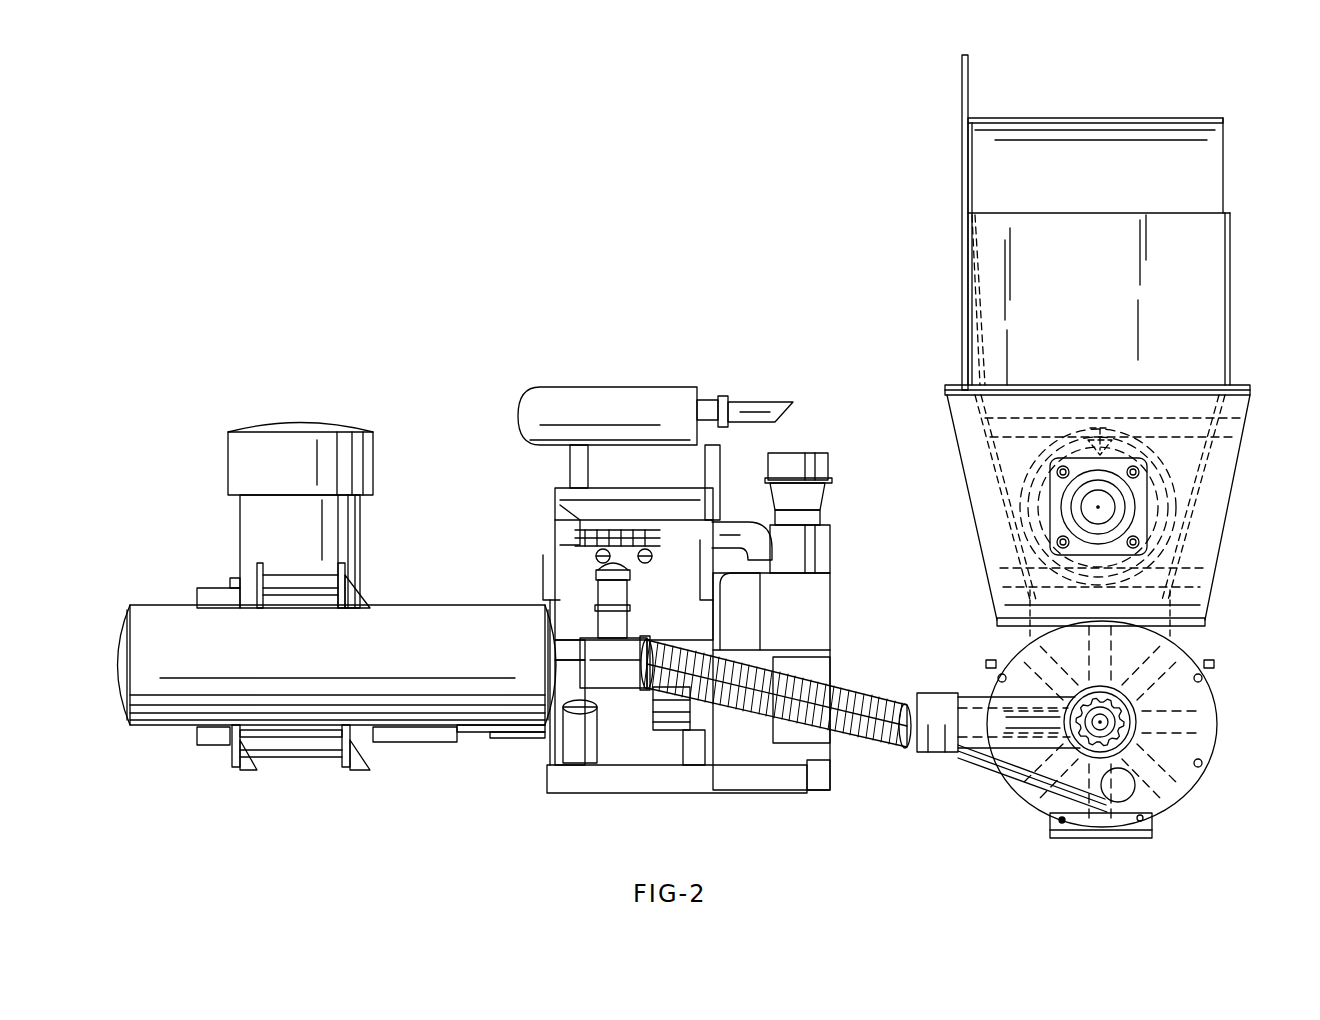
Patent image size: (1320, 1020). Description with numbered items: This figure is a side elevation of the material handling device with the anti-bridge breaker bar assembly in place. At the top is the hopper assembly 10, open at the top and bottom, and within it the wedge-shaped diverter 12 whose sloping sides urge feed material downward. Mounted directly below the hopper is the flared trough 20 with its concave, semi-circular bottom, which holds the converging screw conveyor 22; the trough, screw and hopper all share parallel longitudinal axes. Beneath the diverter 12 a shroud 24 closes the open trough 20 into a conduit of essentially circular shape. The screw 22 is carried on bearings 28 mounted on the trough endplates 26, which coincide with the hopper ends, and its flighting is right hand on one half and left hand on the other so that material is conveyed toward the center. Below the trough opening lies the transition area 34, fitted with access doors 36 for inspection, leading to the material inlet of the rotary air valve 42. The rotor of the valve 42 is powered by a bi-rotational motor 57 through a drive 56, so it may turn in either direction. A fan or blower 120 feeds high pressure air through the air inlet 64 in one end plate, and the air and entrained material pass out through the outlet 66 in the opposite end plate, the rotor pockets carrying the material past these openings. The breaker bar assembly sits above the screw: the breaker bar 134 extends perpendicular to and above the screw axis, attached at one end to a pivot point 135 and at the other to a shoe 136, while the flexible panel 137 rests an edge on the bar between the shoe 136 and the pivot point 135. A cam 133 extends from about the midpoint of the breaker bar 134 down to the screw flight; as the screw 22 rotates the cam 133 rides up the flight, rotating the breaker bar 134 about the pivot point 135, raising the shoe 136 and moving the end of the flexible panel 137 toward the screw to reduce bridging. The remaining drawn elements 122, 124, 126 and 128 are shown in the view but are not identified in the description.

The hopper assembly 10 is at (1043, 90).
The diverter 12 is at (1212, 153).
The flared trough 20 is at (1210, 572).
The screw conveyor 22 is at (1000, 497).
The shroud 24 is at (1222, 458).
The trough endplates 26 is at (1225, 490).
The bearings 28 is at (1135, 515).
The transition area 34 is at (1010, 550).
The access doors 36 is at (1030, 597).
The rotary air valve 42 is at (1222, 727).
The drive 56 is at (973, 692).
The bi-rotational motor 57 is at (935, 762).
The air inlet 64 is at (1137, 797).
The air outlet 66 is at (1025, 818).
The fan or blower 120 is at (315, 760).
The motor 122 is at (300, 420).
The tank 124 is at (110, 693).
The engine 126 is at (578, 570).
The air filter 128 is at (745, 585).
The cam 133 is at (1135, 420).
The breaker bar 134 is at (1045, 420).
The pivot point 135 is at (1262, 414).
The shoe 136 is at (985, 432).
The flexible panel 137 is at (960, 368).